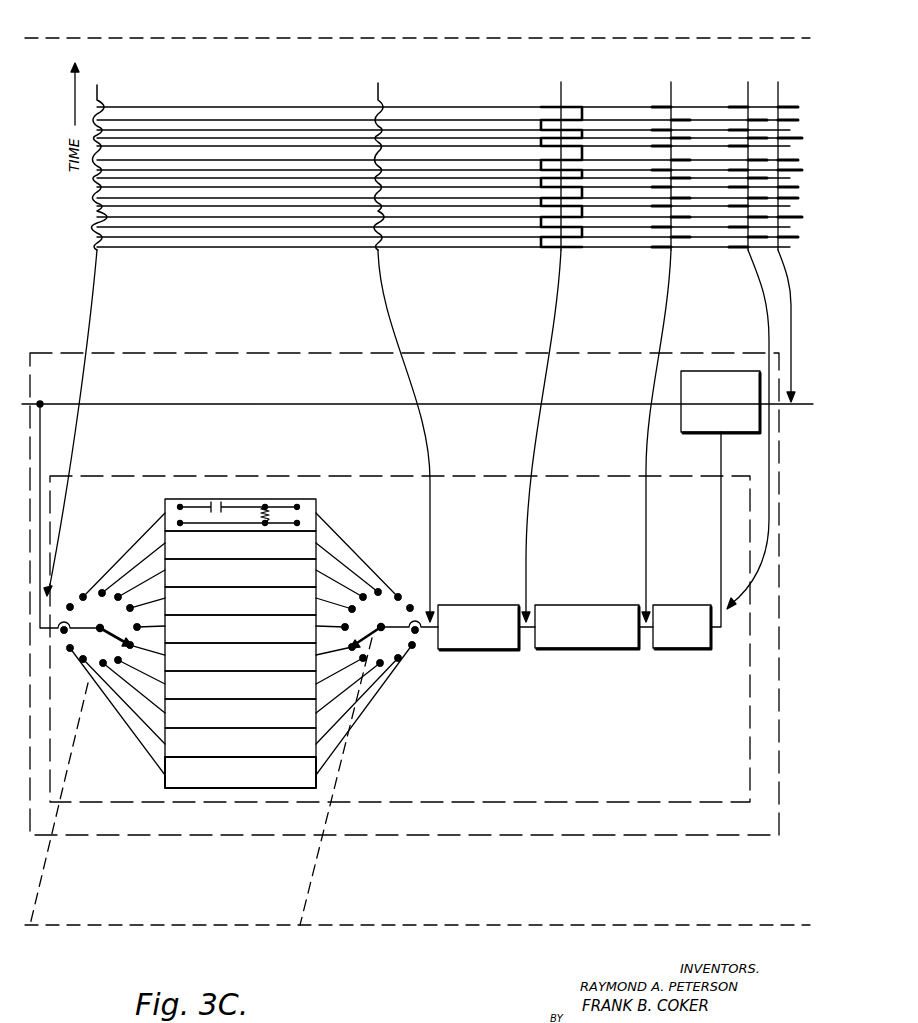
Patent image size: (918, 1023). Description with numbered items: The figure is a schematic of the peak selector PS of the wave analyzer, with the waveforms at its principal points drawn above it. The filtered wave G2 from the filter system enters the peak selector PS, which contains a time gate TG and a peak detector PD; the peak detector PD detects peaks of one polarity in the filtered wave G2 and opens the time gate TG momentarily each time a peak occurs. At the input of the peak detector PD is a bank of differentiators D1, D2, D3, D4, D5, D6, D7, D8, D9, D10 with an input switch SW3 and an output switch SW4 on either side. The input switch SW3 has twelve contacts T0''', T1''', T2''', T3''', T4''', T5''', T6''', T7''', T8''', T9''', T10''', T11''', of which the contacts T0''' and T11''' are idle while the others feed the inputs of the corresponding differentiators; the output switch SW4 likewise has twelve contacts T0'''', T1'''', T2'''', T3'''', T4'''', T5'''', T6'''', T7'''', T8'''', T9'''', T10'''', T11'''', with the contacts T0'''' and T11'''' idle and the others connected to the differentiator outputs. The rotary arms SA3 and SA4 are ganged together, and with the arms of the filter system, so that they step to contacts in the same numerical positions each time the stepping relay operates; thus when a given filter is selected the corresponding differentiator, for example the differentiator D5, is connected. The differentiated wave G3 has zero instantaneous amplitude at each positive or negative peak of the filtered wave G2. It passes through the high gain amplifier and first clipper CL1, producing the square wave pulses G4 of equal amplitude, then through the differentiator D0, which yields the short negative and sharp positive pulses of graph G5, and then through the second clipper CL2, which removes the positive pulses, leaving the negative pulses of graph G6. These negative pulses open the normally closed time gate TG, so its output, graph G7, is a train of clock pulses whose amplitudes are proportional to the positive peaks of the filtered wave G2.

The filtered wave G2 is at (92, 216).
The differentiated output wave G3 is at (373, 232).
The square wave pulses G4 is at (541, 222).
The differentiated pulse wave G5 is at (664, 217).
The clipped negative pulse wave G6 is at (744, 230).
The clock pulse train G7 is at (775, 222).
The peak selector PS is at (425, 354).
The peak detector PD is at (318, 478).
The input switch SW3 is at (73, 590).
The output switch SW4 is at (406, 593).
The rotary arm SA3 is at (120, 624).
The rotary arm SA4 is at (370, 626).
The differentiator D1 is at (240, 772).
The differentiator D2 is at (240, 742).
The differentiator D3 is at (240, 713).
The differentiator D4 is at (240, 685).
The differentiator D5 is at (240, 657).
The differentiator D6 is at (240, 629).
The differentiator D7 is at (240, 601).
The differentiator D8 is at (240, 573).
The differentiator D9 is at (240, 545).
The differentiator D10 is at (240, 515).
The high gain amplifier and first clipper CL1 is at (497, 651).
The differentiator D0 is at (592, 650).
The second clipper CL2 is at (673, 651).
The time gate TG is at (699, 434).
The idle contact T0''' is at (60, 637).
The contact T1''' is at (61, 660).
The contact T2''' is at (84, 652).
The contact T3''' is at (106, 658).
The contact T4''' is at (127, 667).
The contact T5''' is at (134, 652).
The contact T6''' is at (134, 620).
The contact T7''' is at (134, 601).
The contact T8''' is at (126, 587).
The contact T9''' is at (98, 603).
The contact T10''' is at (93, 584).
The idle contact T11''' is at (63, 601).
The idle contact T0'''' is at (434, 649).
The contact T1'''' is at (415, 670).
The contact T2'''' is at (387, 675).
The contact T3'''' is at (389, 656).
The contact T4'''' is at (344, 663).
The contact T5'''' is at (338, 644).
The contact T6'''' is at (335, 621).
The contact T7'''' is at (339, 602).
The contact T8'''' is at (349, 586).
The contact T9'''' is at (377, 601).
The contact T10'''' is at (393, 583).
The idle contact T11'''' is at (423, 601).